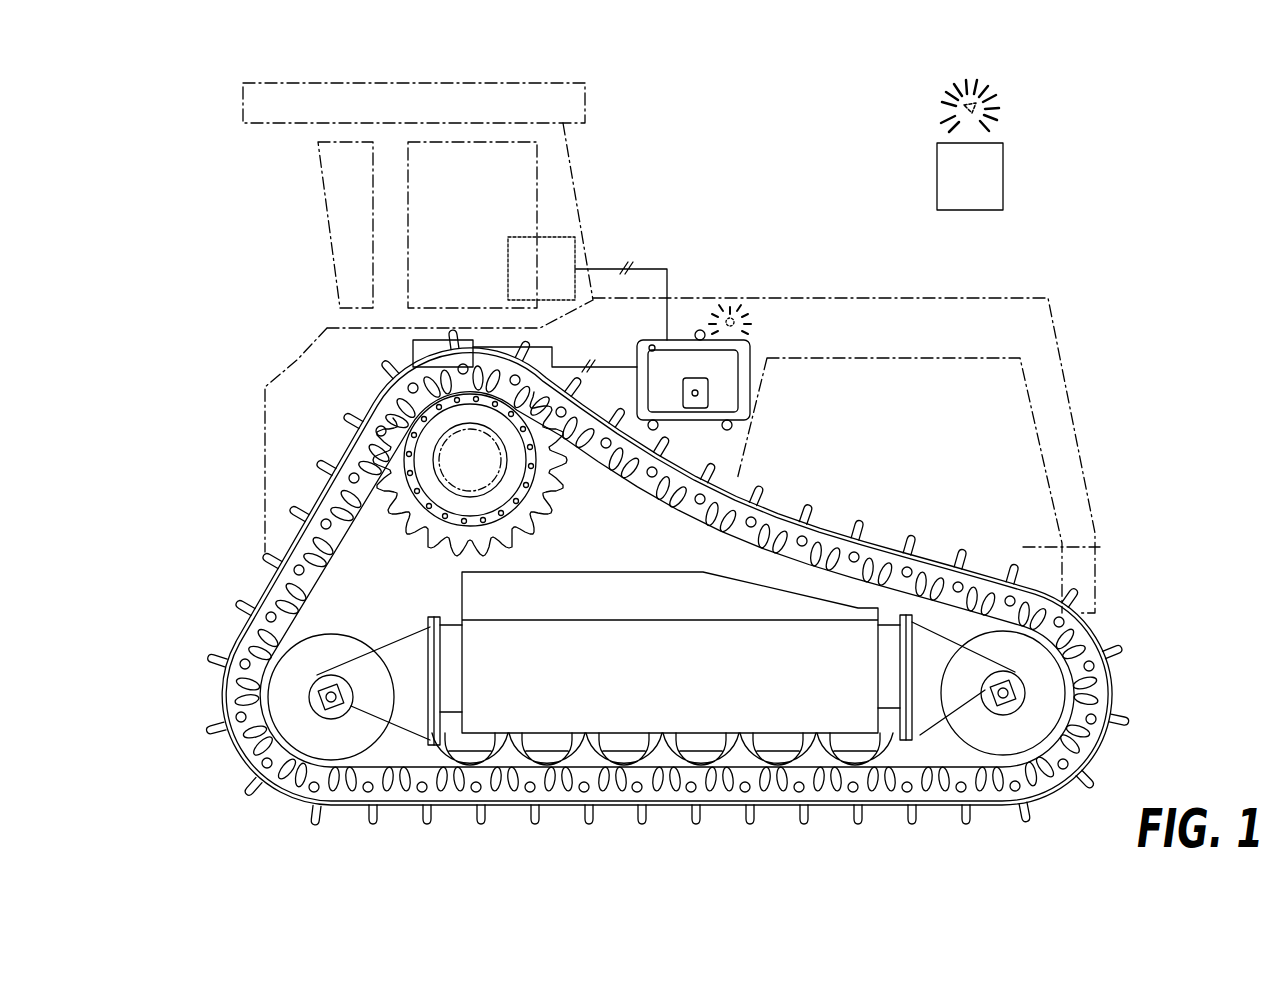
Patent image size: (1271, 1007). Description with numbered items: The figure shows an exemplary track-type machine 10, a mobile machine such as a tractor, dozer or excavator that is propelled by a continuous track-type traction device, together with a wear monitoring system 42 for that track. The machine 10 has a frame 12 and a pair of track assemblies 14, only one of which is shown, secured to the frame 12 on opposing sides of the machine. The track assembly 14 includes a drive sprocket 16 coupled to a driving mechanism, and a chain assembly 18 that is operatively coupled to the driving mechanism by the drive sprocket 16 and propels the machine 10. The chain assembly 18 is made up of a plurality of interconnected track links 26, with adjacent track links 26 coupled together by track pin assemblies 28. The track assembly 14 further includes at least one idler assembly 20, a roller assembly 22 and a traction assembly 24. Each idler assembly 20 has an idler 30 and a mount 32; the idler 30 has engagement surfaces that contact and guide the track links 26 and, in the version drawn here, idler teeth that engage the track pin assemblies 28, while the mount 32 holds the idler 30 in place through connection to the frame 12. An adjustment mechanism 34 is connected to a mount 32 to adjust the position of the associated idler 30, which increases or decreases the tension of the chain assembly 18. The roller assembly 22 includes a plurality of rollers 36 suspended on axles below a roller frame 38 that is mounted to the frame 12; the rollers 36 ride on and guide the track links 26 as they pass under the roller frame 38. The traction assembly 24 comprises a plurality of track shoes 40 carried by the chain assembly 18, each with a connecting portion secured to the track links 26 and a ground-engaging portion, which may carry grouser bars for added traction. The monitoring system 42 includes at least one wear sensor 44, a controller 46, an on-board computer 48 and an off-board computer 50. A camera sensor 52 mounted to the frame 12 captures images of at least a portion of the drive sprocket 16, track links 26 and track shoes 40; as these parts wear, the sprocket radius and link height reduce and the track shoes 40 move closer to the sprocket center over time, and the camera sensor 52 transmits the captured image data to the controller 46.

The track-type machine 10 is at (757, 235).
The frame 12 is at (310, 385).
The track assembly 14 is at (724, 599).
The drive sprocket 16 is at (575, 517).
The chain assembly 18 is at (668, 599).
The idler assembly 20 is at (348, 592).
The roller assembly 22 is at (678, 676).
The traction assembly 24 is at (1045, 800).
The track link 26 is at (752, 810).
The track pin assembly 28 is at (640, 812).
The idler 30 is at (1027, 657).
The mount 32 is at (666, 681).
The adjustment mechanism 34 is at (825, 545).
The roller 36 is at (588, 740).
The roller frame 38 is at (670, 652).
The track shoe 40 is at (462, 810).
The monitoring system 42 is at (660, 187).
The wear sensor 44 is at (413, 350).
The controller 46 is at (745, 350).
The on-board computer 48 is at (563, 237).
The off-board computer 50 is at (1003, 175).
The camera sensor 52 is at (405, 365).